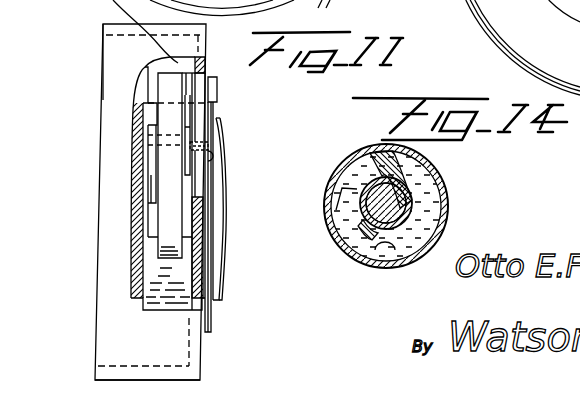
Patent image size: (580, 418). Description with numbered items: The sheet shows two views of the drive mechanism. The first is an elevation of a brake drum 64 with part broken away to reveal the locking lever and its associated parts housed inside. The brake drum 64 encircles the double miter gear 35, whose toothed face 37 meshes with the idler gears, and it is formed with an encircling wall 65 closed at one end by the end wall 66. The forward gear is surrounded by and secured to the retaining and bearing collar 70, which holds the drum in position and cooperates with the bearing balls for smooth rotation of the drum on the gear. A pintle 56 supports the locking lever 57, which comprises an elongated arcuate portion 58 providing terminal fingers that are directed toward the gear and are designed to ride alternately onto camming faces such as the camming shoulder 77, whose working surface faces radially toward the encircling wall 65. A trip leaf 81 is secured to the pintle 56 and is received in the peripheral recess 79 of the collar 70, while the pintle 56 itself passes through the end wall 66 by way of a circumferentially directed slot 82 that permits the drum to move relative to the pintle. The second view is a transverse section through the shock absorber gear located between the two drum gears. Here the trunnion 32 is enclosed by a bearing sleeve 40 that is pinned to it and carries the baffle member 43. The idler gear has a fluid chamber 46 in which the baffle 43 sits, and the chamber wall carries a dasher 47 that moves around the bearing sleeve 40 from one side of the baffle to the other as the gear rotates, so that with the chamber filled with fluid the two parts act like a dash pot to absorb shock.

In FIG. 11, the brake drum 64 is at (102, 54).
In FIG. 11, the encircling wall 65 is at (117, 60).
In FIG. 11, the end wall 66 is at (193, 356).
In FIG. 11, the toothed face 37 is at (138, 173).
In FIG. 11, the elongated arcuate portion 58 is at (170, 126).
In FIG. 11, the double miter gear 35 is at (146, 208).
In FIG. 11, the locking lever 57 is at (166, 223).
In FIG. 11, the camming shoulder 77 is at (160, 277).
In FIG. 11, the trip leaf 81 is at (213, 115).
In FIG. 11, the pintle 56 is at (205, 144).
In FIG. 11, the peripheral recess 79 is at (216, 160).
In FIG. 11, the circumferentially directed slot 82 is at (198, 188).
In FIG. 11, the retaining and bearing collar 70 is at (207, 248).
In FIG. 14, the baffle member 43 is at (420, 167).
In FIG. 14, the bearing sleeve 40 is at (410, 193).
In FIG. 14, the dasher 47 is at (342, 188).
In FIG. 14, the trunnion 32 is at (380, 214).
In FIG. 14, the fluid chamber 46 is at (393, 254).